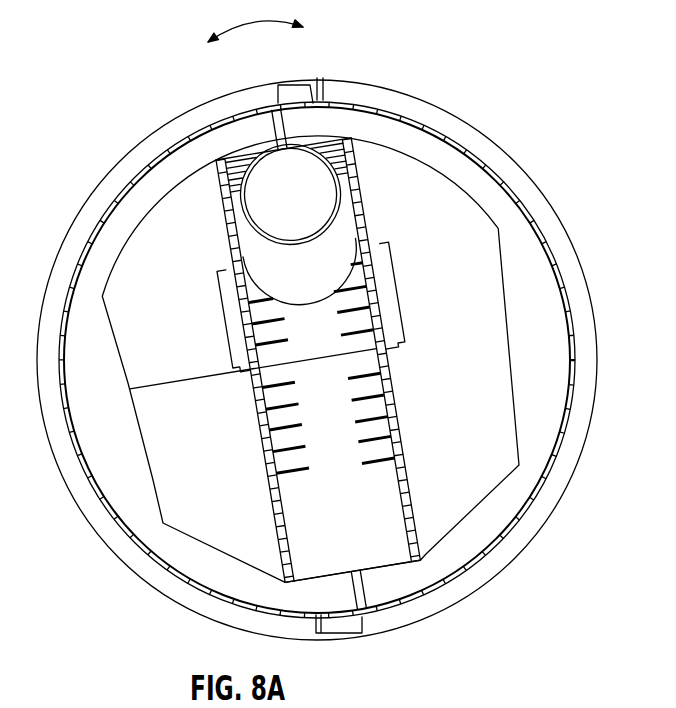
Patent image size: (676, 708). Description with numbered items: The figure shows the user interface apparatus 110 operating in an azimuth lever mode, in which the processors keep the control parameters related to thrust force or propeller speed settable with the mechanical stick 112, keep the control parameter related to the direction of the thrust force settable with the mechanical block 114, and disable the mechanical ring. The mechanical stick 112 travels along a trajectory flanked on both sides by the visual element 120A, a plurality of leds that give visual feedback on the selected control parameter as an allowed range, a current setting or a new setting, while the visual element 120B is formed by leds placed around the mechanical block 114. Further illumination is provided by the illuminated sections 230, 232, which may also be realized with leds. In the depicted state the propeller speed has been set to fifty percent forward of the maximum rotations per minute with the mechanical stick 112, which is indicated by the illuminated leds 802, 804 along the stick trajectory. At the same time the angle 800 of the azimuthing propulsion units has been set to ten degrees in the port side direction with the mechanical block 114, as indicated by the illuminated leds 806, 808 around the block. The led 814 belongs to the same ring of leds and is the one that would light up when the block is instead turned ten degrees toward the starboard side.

The user interface apparatus 110 is at (52, 103).
The mechanical stick 112 is at (240, 207).
The mechanical block 114 is at (127, 382).
The visual element 120A is at (265, 440).
The visual element 120B is at (566, 328).
The illuminated section 230 is at (364, 585).
The illuminated section 232 is at (283, 127).
The angle 800 is at (253, 24).
The illuminated led 802 is at (225, 321).
The illuminated led 804 is at (397, 292).
The illuminated led 806 is at (293, 85).
The illuminated led 808 is at (343, 633).
The illuminated led 814 is at (344, 702).